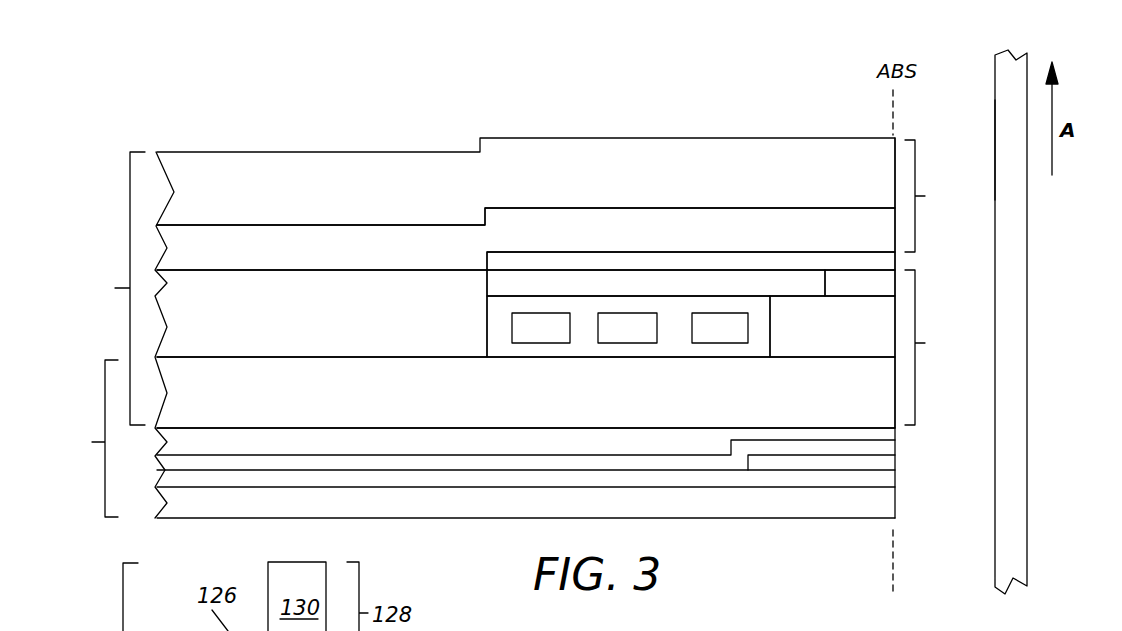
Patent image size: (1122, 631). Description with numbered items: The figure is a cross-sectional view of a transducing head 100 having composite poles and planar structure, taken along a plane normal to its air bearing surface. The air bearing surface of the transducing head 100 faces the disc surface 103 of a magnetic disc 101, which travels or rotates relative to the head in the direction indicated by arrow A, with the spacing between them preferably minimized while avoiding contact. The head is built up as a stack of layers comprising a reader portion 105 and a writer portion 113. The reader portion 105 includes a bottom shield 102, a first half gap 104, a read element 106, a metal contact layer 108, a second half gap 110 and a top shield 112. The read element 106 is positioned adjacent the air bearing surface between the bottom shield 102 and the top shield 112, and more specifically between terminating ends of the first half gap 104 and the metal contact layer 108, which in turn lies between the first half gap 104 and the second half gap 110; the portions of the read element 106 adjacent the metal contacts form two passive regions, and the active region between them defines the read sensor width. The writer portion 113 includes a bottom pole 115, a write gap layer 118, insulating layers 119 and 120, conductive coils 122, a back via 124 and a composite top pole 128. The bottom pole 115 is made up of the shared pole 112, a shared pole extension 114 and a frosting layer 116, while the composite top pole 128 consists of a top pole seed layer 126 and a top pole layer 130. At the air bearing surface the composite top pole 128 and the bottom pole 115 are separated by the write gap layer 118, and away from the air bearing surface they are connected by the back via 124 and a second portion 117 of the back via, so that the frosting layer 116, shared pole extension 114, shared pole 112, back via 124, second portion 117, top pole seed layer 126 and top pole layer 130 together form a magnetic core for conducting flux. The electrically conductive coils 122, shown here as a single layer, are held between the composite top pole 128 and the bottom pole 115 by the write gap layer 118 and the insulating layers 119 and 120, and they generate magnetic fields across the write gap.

The transducing head 100 is at (215, 112).
The magnetic disc 101 is at (1015, 213).
The bottom shield 102 is at (613, 516).
The disc surface 103 is at (995, 150).
The first half gap 104 is at (886, 478).
The reader portion 105 is at (84, 438).
The read element 106 is at (886, 462).
The metal contact layer 108 is at (887, 445).
The second half gap 110 is at (613, 456).
The top shield 112 is at (613, 406).
The writer portion 113 is at (113, 288).
The shared pole extension 114 is at (852, 346).
The bottom pole 115 is at (938, 347).
The frosting layer 116 is at (879, 295).
The second portion of the back via 117 is at (297, 286).
The write gap layer 118 is at (886, 266).
The insulating layer 119 is at (584, 312).
The insulating layer 120 is at (720, 296).
The conductive coils 122 is at (646, 341).
The back via 124 is at (367, 342).
The top pole seed layer 126 is at (768, 244).
The composite top pole 128 is at (937, 196).
The top pole layer 130 is at (713, 187).